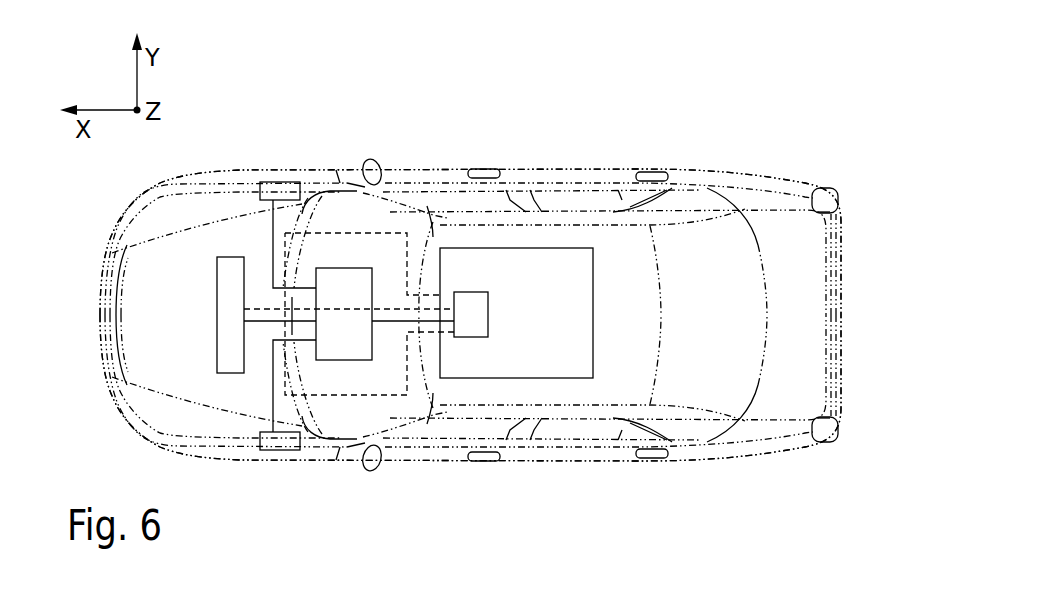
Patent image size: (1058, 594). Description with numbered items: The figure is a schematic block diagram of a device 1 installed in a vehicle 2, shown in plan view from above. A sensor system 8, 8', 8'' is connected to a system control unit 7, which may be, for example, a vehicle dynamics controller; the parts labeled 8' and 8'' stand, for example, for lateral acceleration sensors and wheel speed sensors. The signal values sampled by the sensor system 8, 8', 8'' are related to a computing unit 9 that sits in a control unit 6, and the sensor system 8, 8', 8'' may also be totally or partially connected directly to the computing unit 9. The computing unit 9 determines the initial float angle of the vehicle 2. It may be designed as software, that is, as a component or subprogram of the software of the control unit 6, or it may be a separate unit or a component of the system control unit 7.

The device 1 is at (436, 128).
The vehicle 2 is at (578, 162).
The control unit 6 is at (537, 298).
The system control unit 7 is at (345, 288).
The sensor system 8 is at (231, 228).
The sensor system 8' is at (280, 475).
The sensor system 8'' is at (280, 142).
The computing unit 9 is at (470, 322).